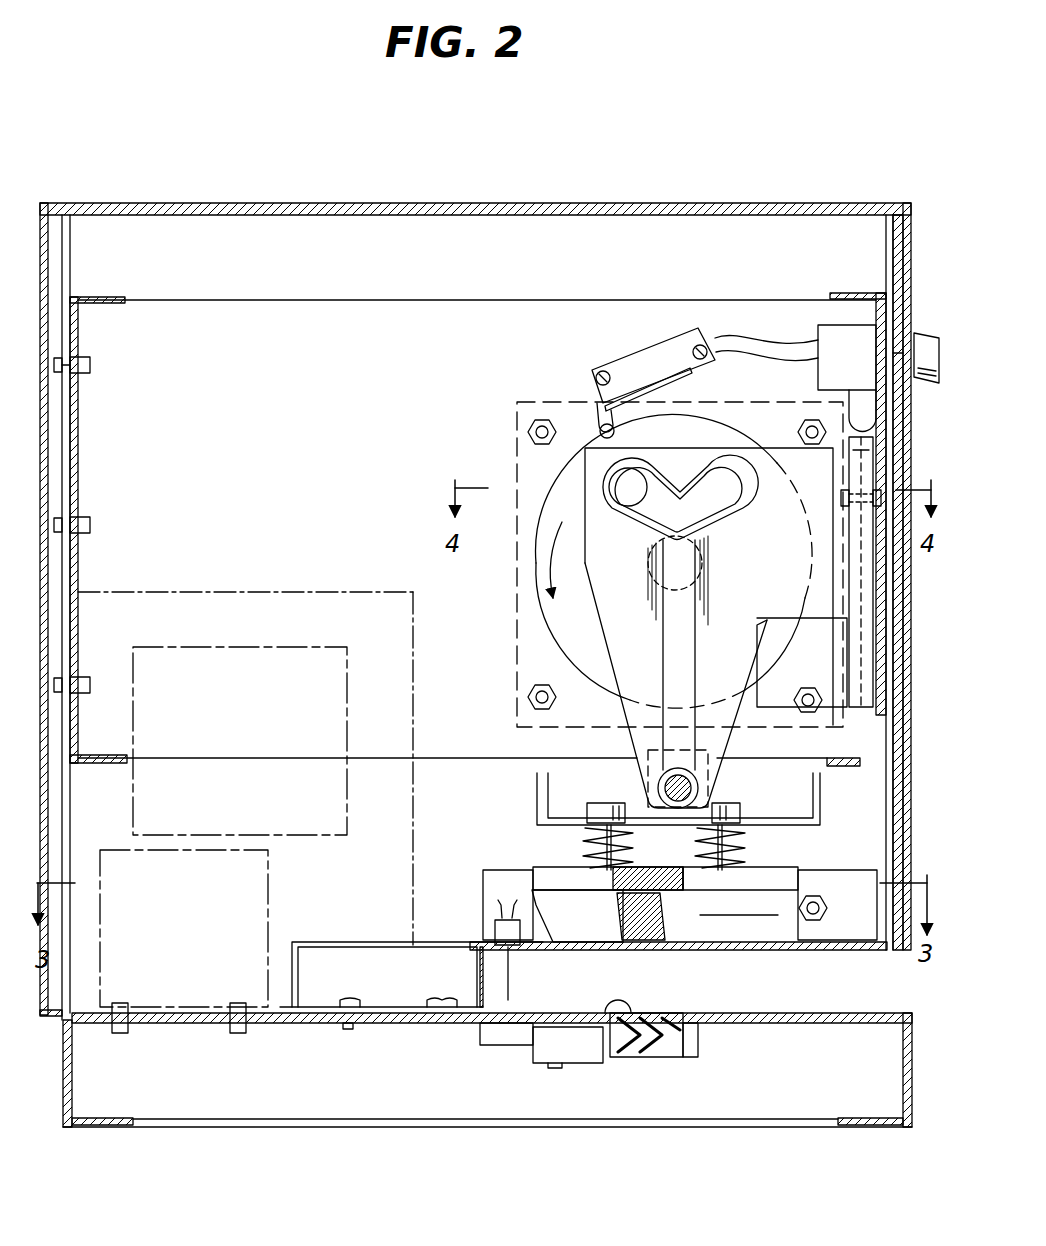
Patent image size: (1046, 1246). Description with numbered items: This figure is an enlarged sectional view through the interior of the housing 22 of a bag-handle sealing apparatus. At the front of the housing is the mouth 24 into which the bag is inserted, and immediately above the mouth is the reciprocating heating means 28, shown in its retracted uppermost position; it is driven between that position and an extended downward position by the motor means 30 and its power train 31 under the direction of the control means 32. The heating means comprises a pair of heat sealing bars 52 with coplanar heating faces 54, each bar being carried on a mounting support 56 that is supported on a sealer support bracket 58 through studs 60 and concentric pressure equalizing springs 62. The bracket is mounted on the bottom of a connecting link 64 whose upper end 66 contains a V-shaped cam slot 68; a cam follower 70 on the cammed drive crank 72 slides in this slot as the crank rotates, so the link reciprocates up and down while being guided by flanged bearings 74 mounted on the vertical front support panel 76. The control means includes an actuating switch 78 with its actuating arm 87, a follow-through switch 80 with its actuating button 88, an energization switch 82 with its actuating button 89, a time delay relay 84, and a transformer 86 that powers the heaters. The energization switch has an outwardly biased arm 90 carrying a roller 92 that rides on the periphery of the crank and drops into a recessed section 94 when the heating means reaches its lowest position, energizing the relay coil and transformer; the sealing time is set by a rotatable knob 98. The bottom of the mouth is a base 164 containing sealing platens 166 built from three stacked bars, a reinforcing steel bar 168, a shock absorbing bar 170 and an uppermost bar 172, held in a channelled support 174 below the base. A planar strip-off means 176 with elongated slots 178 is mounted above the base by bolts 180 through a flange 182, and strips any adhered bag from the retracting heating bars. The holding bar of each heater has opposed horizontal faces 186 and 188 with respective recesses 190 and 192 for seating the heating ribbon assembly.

The housing 22 is at (673, 201).
The mouth 24 is at (840, 988).
The heating means 28 is at (772, 925).
The motor means 30 is at (565, 610).
The power train 31 is at (620, 624).
The control means 32 is at (680, 358).
The heat sealing bars 52 is at (547, 900).
The heating faces 54 is at (670, 938).
The mounting support 56 is at (647, 868).
The sealer support bracket 58 is at (537, 788).
The studs 60 is at (592, 805).
The pressure equalizing springs 62 is at (592, 840).
The connecting link 64 is at (590, 502).
The upper end of the connecting link 66 is at (698, 463).
The cam slot 68 is at (727, 504).
The cam follower 70 is at (645, 494).
The cammed drive crank 72 is at (683, 425).
The flanged bearings 74 is at (843, 627).
The front support panel 76 is at (863, 724).
The actuating switch 78 is at (493, 918).
The follow-through switch 80 is at (858, 402).
The energization switch 82 is at (624, 366).
The time delay relay 84 is at (270, 880).
The transformer 86 is at (238, 647).
The actuating arm 87 is at (507, 987).
The actuating button 88 is at (862, 425).
The actuating button 89 is at (640, 392).
The outwardly biased arm 90 is at (598, 408).
The roller 92 is at (600, 434).
The recessed section 94 is at (841, 497).
The manually rotatable knob 98 is at (921, 335).
The base 164 is at (803, 1020).
The sealing platens 166 is at (541, 1045).
The steel bar 168 is at (673, 987).
The shock absorbing bar 170 is at (688, 1035).
The uppermost bar 172 is at (688, 1050).
The channelled support 174 is at (606, 1062).
The strip-off means 176 is at (744, 950).
The slots 178 is at (603, 953).
The bolts 180 is at (438, 965).
The flange 182 is at (420, 1000).
The top face 186 is at (652, 897).
The lower face 188 is at (637, 944).
The recess 190 is at (613, 879).
The recess 192 is at (628, 915).